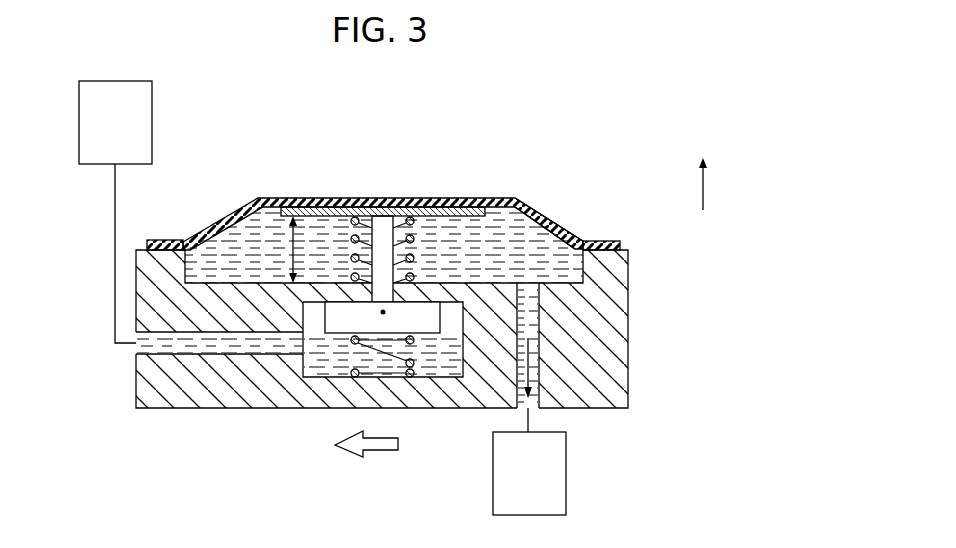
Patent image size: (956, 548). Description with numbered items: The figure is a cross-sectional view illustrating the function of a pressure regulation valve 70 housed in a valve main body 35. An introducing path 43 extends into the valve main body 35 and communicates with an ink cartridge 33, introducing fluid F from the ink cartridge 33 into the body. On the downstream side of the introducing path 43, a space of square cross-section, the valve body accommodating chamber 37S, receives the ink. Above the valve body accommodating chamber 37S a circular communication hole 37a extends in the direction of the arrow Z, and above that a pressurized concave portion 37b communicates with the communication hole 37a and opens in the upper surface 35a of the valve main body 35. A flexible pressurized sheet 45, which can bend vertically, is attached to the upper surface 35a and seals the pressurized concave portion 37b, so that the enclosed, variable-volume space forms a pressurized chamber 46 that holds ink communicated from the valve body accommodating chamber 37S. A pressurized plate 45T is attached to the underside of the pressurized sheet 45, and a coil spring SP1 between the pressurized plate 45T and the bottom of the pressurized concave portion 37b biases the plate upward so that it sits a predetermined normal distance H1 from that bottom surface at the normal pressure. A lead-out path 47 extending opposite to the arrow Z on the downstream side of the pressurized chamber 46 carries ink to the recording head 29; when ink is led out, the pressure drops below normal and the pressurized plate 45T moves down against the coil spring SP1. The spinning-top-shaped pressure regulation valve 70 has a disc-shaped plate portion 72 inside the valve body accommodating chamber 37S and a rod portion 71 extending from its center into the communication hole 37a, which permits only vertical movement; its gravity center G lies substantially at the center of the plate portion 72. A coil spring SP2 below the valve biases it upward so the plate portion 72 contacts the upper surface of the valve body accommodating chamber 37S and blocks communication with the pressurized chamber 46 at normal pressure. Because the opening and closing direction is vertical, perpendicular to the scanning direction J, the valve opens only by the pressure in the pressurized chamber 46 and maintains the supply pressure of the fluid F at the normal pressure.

The recording head 29 is at (557, 487).
The ink cartridge 33 is at (140, 100).
The valve main body 35 is at (162, 403).
The upper surface 35a is at (620, 246).
The communication hole 37a is at (412, 208).
The pressurized concave portion 37b is at (195, 262).
The valve body accommodating chamber 37S is at (462, 350).
The introducing path 43 is at (200, 345).
The pressurized sheet 45 is at (530, 206).
The pressurized plate 45T is at (545, 214).
The pressurized chamber 46 is at (536, 249).
The lead-out path 47 is at (533, 373).
The pressure regulation valve 70 is at (389, 285).
The rod portion 71 is at (378, 232).
The plate portion 72 is at (436, 317).
The fluid F is at (258, 345).
The gravity center G is at (383, 314).
The normal distance H1 is at (300, 238).
The scanning direction J is at (366, 454).
The coil spring SP1 is at (412, 235).
The coil spring SP2 is at (345, 360).
The arrow Z is at (703, 171).